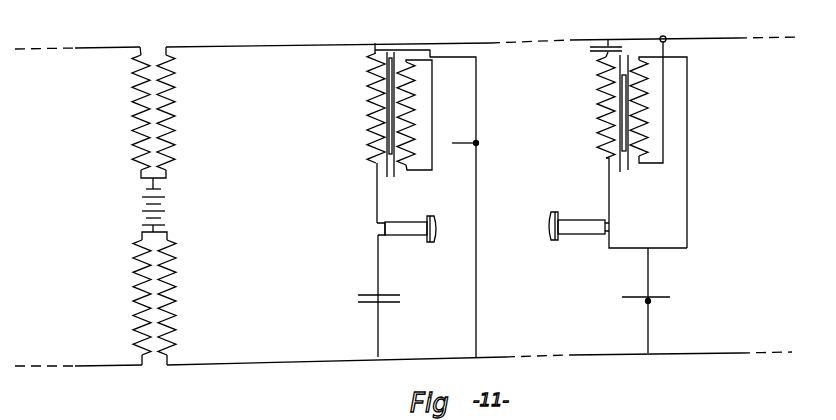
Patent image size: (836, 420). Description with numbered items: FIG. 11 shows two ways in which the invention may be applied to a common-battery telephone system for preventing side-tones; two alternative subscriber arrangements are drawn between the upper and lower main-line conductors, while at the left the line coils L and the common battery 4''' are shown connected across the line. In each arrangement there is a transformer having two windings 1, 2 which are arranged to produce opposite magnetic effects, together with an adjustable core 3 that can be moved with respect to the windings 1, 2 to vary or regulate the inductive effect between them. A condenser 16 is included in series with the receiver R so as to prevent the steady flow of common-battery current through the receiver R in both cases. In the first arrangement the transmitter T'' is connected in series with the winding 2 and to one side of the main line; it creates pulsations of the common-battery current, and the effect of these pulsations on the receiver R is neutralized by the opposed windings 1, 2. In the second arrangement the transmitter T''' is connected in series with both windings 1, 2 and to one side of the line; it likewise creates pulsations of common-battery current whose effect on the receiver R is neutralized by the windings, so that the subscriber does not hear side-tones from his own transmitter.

The inductance coil L is at (184, 82).
The battery 4''' is at (170, 205).
The transformer winding 1 is at (367, 128).
The transformer winding 2 is at (410, 110).
The core 3 is at (390, 70).
The receiver R is at (405, 221).
The transmitter T'' is at (474, 154).
The condenser 16 is at (357, 300).
The transmitter T''' is at (649, 313).